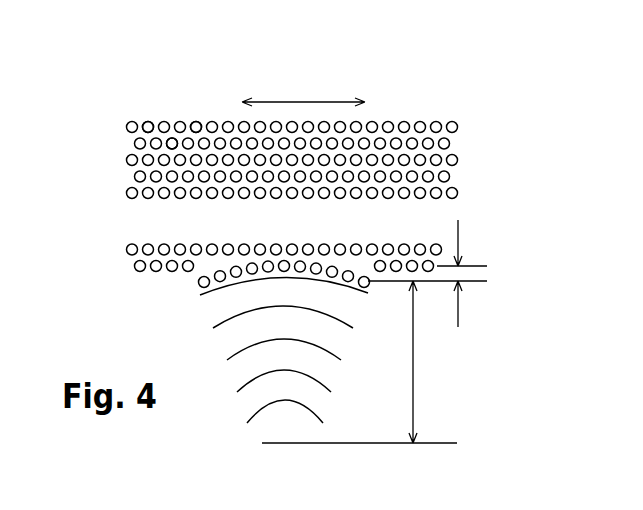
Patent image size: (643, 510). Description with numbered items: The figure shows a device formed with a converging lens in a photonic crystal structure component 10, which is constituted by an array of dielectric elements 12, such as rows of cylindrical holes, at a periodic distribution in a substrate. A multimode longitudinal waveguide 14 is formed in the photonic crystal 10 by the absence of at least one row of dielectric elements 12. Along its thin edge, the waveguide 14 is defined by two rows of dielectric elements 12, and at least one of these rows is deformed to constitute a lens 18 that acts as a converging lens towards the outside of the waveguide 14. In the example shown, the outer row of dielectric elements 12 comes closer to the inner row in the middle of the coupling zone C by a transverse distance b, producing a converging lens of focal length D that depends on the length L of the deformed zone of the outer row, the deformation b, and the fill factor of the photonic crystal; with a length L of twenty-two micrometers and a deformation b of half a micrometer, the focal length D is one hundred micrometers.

The photonic crystal structure component 10 is at (450, 105).
The dielectric elements 12 is at (195, 125).
The multimode longitudinal waveguide 14 is at (140, 217).
The lens 18 is at (279, 262).
The coupling zone C is at (211, 255).
The length of the deformed zone L is at (303, 91).
The transverse deformation b is at (427, 271).
The focal length D is at (359, 362).